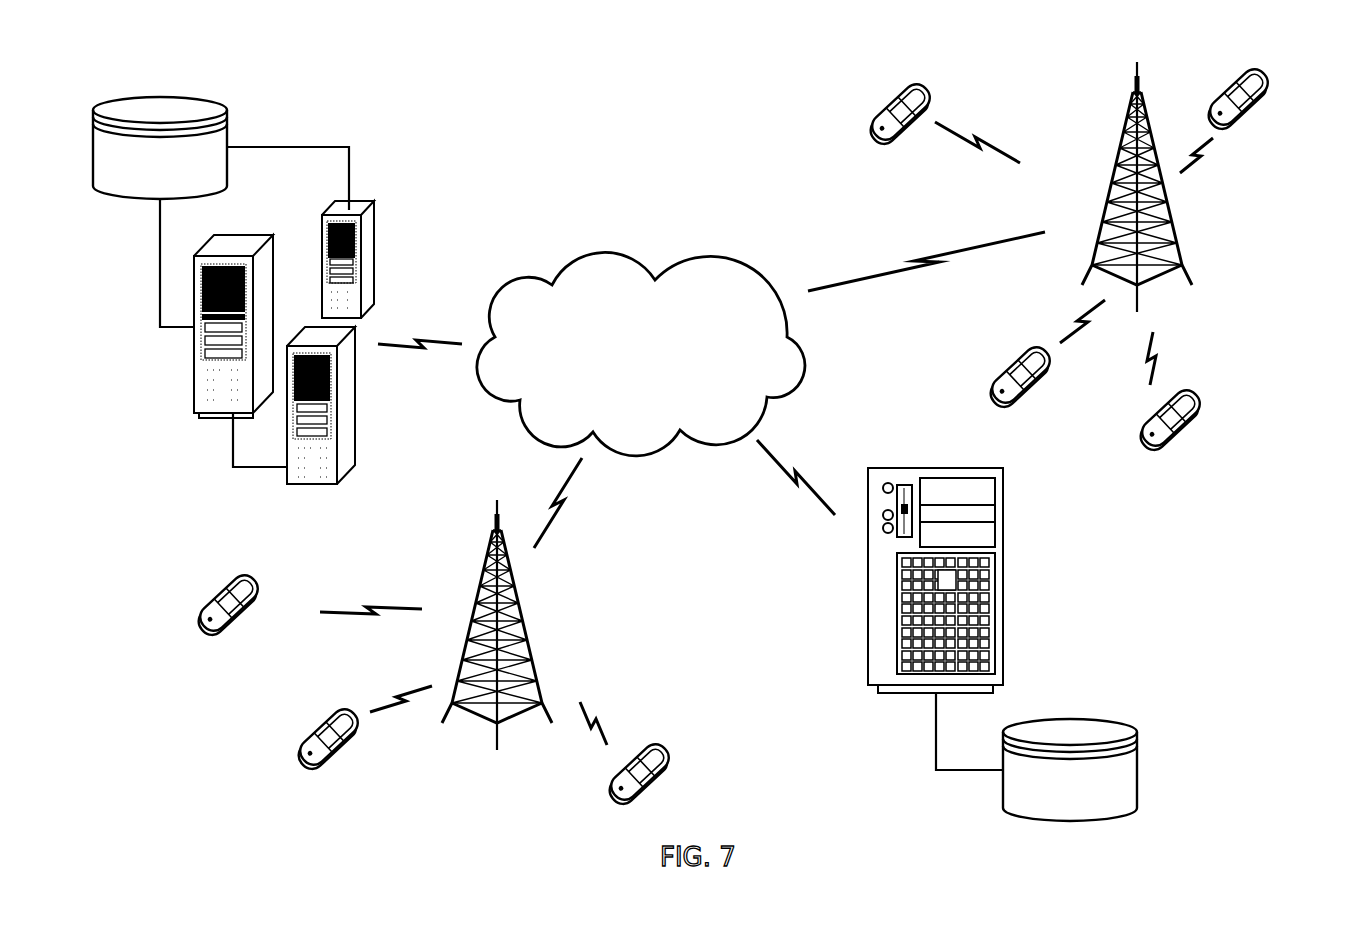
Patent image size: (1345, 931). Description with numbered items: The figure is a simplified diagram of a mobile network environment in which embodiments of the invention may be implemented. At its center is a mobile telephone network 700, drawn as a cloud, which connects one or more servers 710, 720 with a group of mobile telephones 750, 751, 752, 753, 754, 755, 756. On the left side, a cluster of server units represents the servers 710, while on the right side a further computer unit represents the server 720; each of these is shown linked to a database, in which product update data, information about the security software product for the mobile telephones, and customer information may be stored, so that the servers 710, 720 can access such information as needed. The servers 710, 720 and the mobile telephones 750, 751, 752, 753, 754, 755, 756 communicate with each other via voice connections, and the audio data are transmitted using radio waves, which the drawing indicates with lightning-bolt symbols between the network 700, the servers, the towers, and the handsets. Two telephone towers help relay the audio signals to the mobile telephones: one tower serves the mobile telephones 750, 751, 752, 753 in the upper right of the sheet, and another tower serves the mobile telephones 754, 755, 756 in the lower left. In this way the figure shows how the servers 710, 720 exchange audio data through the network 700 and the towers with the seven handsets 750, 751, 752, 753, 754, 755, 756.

The network 700 is at (632, 262).
The server 710 is at (353, 396).
The server 720 is at (1003, 564).
The mobile telephone 750 is at (918, 78).
The mobile telephone 751 is at (1252, 63).
The mobile telephone 752 is at (1036, 341).
The mobile telephone 753 is at (1186, 381).
The mobile telephone 754 is at (243, 567).
The mobile telephone 755 is at (343, 704).
The mobile telephone 756 is at (650, 734).